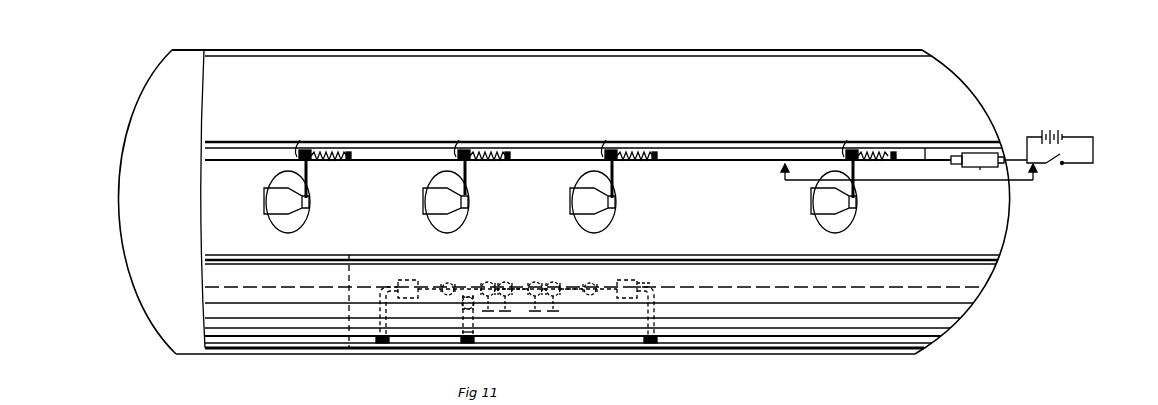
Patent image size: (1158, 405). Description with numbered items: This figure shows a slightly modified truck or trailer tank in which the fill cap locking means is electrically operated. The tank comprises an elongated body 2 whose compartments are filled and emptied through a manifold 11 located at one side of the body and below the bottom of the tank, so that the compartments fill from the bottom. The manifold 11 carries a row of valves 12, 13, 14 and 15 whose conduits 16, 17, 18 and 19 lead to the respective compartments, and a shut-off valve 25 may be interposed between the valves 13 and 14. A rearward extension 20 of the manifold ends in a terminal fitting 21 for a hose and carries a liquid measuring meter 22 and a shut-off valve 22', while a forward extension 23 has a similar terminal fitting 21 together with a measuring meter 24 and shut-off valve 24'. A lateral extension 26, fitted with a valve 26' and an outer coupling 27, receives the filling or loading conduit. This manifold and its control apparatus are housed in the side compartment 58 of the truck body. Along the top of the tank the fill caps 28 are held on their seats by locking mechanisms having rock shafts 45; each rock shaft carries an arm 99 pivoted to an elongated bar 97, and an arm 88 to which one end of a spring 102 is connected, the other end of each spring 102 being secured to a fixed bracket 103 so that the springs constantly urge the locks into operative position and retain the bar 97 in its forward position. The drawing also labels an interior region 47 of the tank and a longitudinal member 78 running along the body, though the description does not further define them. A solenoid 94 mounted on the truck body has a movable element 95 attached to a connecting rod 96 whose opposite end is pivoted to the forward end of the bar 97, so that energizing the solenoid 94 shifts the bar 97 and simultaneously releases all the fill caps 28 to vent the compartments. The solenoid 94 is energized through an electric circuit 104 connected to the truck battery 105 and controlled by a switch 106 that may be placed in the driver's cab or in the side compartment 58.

The elongated body 2 is at (987, 297).
The manifold 11 is at (576, 278).
The valve 12 is at (474, 254).
The valve 13 is at (507, 281).
The valve 14 is at (545, 283).
The valve 15 is at (562, 312).
The conduit 16 is at (488, 281).
The conduit 17 is at (500, 281).
The conduit 18 is at (535, 281).
The conduit 19 is at (555, 281).
The rearward extension 20 is at (436, 284).
The terminal fitting 21 is at (380, 347).
The liquid measuring meter 22 is at (405, 267).
The shut-off valve 22' is at (447, 279).
The forward extension 23 is at (655, 284).
The measuring meter 24 is at (640, 268).
The shut-off valve 24' is at (600, 279).
The shut-off valve 25 is at (521, 283).
The lateral extension 26 is at (482, 330).
The valve 26' is at (453, 309).
The coupling 27 is at (463, 344).
The fill cap 28 is at (311, 216).
The rock shaft 45 is at (308, 186).
The tank interior 47 is at (716, 215).
The side compartment 58 is at (348, 296).
The pipe 78 is at (728, 143).
The arm 88 is at (308, 151).
The solenoid 94 is at (980, 170).
The movable element 95 is at (957, 153).
The connecting rod 96 is at (925, 160).
The elongated bar 97 is at (729, 162).
The arm 99 is at (565, 140).
The spring 102 is at (331, 155).
The fixed bracket 103 is at (352, 154).
The electric circuit 104 is at (1097, 139).
The battery 105 is at (1052, 130).
The control switch 106 is at (1058, 166).